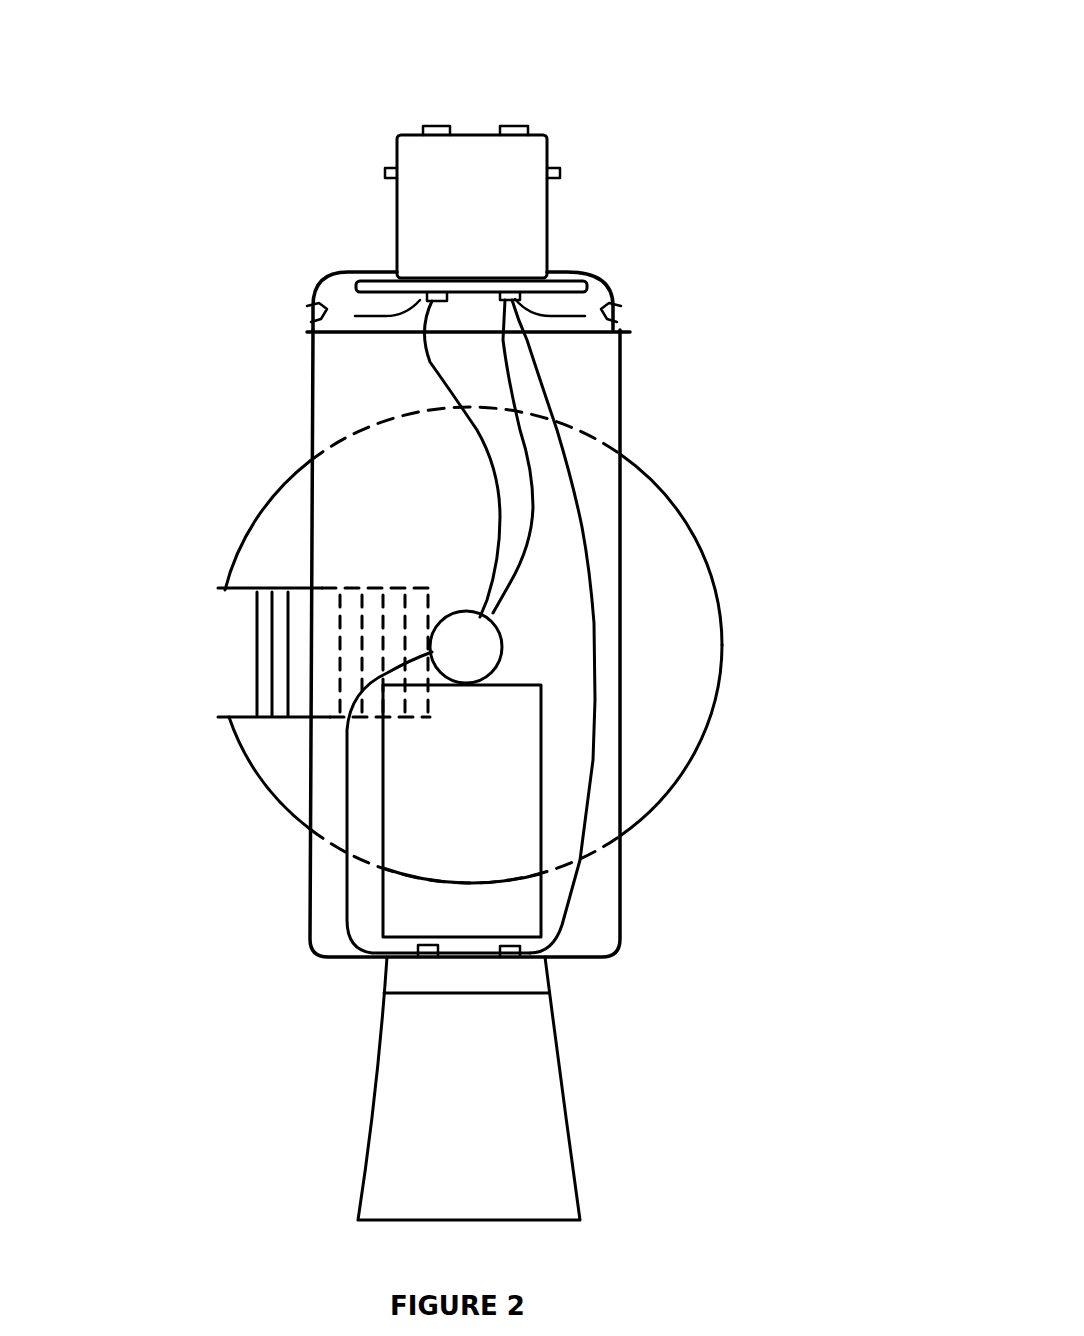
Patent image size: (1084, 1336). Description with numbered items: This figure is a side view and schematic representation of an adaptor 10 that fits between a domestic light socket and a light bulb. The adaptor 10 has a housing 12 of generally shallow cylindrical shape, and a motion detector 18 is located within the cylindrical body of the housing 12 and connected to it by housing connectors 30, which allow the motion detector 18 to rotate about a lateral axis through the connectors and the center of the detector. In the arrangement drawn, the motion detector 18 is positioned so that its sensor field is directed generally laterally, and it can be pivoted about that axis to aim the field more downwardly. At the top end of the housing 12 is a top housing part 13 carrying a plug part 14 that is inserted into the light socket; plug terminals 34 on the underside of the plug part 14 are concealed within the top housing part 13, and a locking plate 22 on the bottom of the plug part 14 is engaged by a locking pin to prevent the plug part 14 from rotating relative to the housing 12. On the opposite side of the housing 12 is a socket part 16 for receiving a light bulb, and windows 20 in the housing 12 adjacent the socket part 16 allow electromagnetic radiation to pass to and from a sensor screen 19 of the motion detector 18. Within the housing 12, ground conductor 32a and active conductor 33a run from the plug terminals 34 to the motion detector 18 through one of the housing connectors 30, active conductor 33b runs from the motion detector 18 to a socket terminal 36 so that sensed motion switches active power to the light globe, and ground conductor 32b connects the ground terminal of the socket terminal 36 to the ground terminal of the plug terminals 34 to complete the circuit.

The adaptor 10 is at (688, 212).
The housing 12 is at (645, 970).
The top housing part 13 is at (332, 277).
The plug part 14 is at (558, 118).
The socket part 16 is at (607, 1166).
The motion detector 18 is at (681, 582).
The sensor screen 19 is at (245, 689).
The windows 20 is at (420, 818).
The locking plate 22 is at (582, 270).
The housing connectors 30 is at (505, 658).
The ground conductor 32a is at (542, 478).
The ground conductor 32b is at (588, 512).
The active conductor 33a is at (455, 380).
The active conductor 33b is at (343, 927).
The plug terminals 34 is at (497, 304).
The socket terminal 36 is at (493, 963).